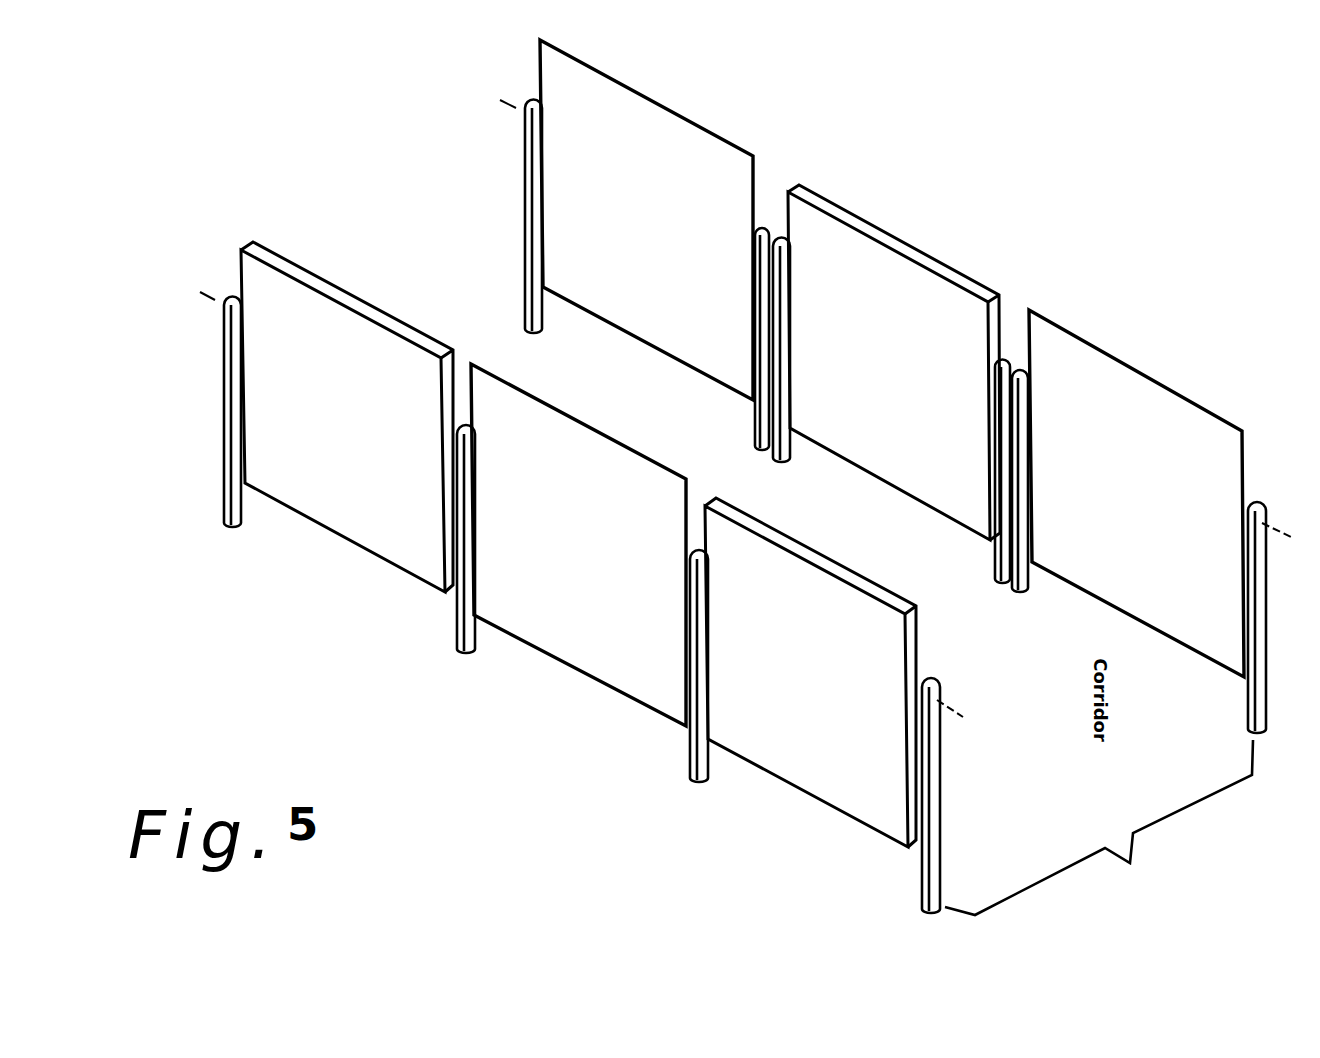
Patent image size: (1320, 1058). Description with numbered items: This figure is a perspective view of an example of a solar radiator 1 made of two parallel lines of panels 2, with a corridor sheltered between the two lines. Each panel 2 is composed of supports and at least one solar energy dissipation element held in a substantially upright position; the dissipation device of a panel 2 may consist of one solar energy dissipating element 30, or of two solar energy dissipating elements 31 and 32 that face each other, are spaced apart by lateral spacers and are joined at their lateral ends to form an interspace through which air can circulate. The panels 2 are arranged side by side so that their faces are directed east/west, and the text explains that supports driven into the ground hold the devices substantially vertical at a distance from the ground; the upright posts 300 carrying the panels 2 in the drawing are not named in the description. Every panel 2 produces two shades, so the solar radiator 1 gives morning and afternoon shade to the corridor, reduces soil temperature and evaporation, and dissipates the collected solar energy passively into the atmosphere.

The solar radiator 1 is at (226, 129).
The panel 2 is at (300, 560).
The solar energy dissipating element 30 is at (630, 86).
The solar energy dissipating element 31 is at (333, 320).
The solar energy dissipating element 32 is at (372, 302).
The post 300 is at (226, 306).